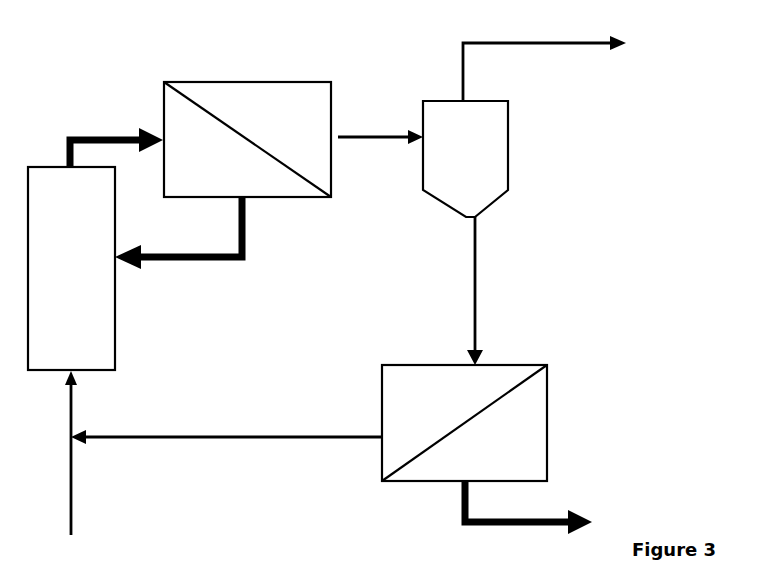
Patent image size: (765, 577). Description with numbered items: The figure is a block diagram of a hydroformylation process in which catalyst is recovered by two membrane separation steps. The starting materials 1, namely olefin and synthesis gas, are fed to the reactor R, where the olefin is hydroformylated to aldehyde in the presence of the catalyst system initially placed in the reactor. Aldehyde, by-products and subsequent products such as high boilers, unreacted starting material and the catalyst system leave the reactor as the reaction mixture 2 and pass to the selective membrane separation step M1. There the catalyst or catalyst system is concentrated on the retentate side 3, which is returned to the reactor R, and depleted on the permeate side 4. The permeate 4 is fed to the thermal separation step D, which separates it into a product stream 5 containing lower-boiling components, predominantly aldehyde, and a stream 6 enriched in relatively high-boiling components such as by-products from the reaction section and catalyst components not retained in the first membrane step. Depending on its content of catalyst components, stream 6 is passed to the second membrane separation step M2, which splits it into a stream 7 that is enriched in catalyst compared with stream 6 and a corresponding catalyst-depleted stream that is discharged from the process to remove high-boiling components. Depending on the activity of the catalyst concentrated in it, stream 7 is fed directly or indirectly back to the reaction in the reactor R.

The starting materials 1 is at (61, 453).
The reaction mixture 2 is at (116, 137).
The retentate side 3 is at (193, 233).
The permeate side 4 is at (380, 125).
The product stream 5 is at (544, 68).
The stream enriched in relatively high-boiling components 6 is at (516, 375).
The catalyst-enriched stream 7 is at (226, 423).
The reactor R is at (71, 268).
The membrane separation step M1 is at (247, 139).
The thermal separation step D is at (465, 159).
The second membrane separation step M2 is at (464, 423).